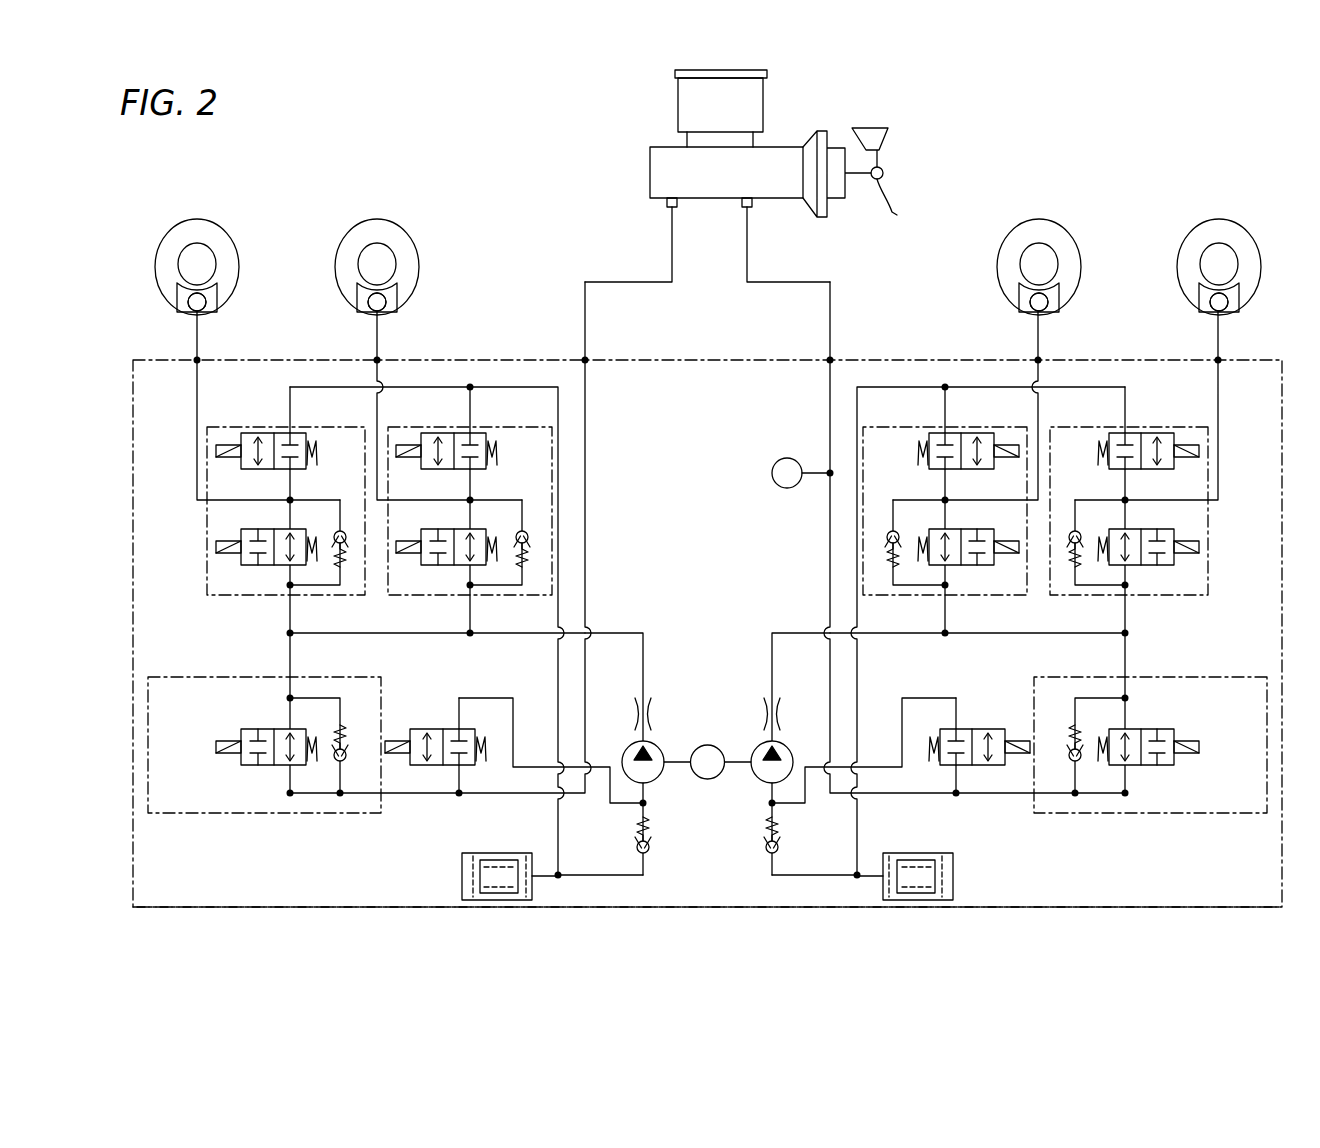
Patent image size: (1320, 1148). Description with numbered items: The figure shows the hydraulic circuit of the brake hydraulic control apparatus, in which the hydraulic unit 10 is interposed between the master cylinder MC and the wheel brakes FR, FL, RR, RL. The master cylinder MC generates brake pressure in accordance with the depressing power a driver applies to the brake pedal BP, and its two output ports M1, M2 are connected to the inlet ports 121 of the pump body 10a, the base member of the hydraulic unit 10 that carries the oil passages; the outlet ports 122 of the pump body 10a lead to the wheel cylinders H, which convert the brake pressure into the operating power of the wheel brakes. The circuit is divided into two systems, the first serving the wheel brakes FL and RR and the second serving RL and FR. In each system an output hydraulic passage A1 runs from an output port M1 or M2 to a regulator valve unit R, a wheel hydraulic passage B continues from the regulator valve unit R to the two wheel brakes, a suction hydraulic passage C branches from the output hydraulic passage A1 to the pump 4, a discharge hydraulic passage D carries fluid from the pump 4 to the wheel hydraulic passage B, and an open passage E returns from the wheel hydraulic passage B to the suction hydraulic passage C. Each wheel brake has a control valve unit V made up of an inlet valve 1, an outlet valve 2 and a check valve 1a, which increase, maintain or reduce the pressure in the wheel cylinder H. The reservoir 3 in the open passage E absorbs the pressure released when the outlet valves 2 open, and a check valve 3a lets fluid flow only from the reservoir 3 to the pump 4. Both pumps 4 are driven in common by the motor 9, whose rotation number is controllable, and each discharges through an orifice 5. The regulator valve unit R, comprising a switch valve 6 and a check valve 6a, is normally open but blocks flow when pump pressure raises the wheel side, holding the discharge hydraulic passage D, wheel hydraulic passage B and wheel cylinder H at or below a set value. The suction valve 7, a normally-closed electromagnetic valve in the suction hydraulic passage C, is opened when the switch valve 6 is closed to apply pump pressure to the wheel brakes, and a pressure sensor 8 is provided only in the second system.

The inlet valve 1 is at (250, 567).
The check valve 1a is at (350, 530).
The outlet valve 2 is at (301, 433).
The reservoir 3 is at (435, 895).
The check valve 3a is at (651, 846).
The pump 4 is at (652, 782).
The orifice 5 is at (652, 714).
The switch valve 6 is at (250, 766).
The check valve 6a is at (347, 752).
The suction valve 7 is at (418, 728).
The pressure sensor 8 is at (772, 473).
The motor 9 is at (707, 745).
The hydraulic unit 10 is at (906, 330).
The pump body 10a is at (295, 908).
The inlet port 121 is at (583, 358).
The outlet port 122 is at (200, 358).
The wheel brake FL is at (200, 209).
The wheel brake RR is at (380, 209).
The wheel brake RL is at (1046, 210).
The wheel brake FR is at (1226, 210).
The wheel cylinder H is at (206, 302).
The master cylinder MC is at (650, 172).
The output port M1 is at (668, 206).
The output port M2 is at (755, 206).
The brake pedal BP is at (905, 208).
The output hydraulic passage A1 is at (587, 435).
The wheel hydraulic passage B is at (199, 392).
The suction hydraulic passage C is at (527, 768).
The discharge hydraulic passage D is at (612, 632).
The open passage E is at (471, 386).
The control valve unit V is at (207, 520).
The regulator valve unit R is at (178, 814).